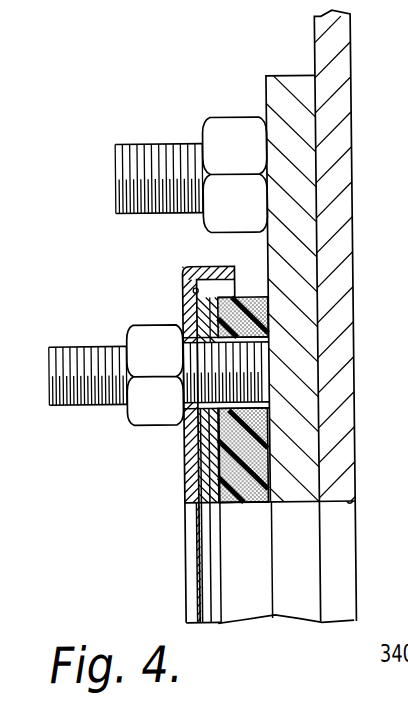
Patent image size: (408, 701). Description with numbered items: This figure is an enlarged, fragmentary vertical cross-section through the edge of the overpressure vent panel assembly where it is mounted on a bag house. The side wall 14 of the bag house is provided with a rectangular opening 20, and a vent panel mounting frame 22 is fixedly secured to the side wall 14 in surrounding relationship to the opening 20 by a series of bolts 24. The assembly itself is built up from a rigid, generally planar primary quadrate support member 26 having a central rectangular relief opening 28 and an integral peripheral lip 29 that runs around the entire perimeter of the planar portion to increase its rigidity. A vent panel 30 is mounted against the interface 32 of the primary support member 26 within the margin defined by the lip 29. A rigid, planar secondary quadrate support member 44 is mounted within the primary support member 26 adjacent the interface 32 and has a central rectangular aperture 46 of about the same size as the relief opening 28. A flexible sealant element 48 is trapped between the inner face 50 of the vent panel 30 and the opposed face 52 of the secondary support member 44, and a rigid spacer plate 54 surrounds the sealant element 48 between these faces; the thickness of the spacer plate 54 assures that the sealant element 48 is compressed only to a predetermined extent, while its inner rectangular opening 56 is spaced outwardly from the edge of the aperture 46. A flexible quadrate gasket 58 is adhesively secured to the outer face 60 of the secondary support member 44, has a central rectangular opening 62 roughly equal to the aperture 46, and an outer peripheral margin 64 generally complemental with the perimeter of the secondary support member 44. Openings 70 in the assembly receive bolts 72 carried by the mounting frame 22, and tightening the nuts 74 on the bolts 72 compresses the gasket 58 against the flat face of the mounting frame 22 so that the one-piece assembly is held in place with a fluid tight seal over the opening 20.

The side wall 14 is at (345, 353).
The rectangular opening 20 is at (349, 508).
The vent panel mounting frame 22 is at (280, 82).
The bolts 24 is at (140, 142).
The primary quadrate support member 26 is at (199, 446).
The central rectangular relief opening 28 is at (183, 516).
The integral peripheral lip 29 is at (218, 262).
The vent panel 30 is at (194, 600).
The interface 32 is at (197, 289).
The secondary quadrate support member 44 is at (208, 490).
The central rectangular aperture 46 is at (220, 515).
The flexible sealant element 48 is at (208, 472).
The inner face 50 is at (197, 608).
The opposed face 52 is at (195, 552).
The spacer plate 54 is at (200, 428).
The inner rectangular opening 56 is at (269, 437).
The flexible quadrate gasket 58 is at (266, 470).
The outer face 60 is at (235, 502).
The central rectangular opening 62 is at (261, 503).
The outer peripheral margin 64 is at (253, 298).
The openings 70 is at (183, 327).
The bolts 72 is at (54, 350).
The nuts 74 is at (133, 342).